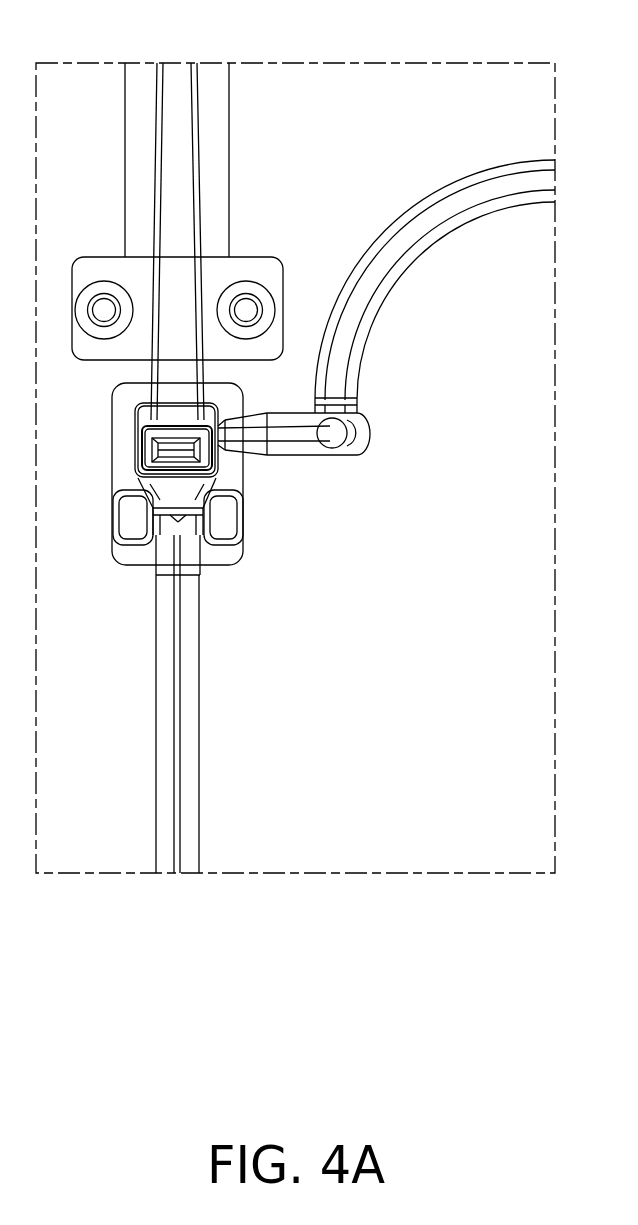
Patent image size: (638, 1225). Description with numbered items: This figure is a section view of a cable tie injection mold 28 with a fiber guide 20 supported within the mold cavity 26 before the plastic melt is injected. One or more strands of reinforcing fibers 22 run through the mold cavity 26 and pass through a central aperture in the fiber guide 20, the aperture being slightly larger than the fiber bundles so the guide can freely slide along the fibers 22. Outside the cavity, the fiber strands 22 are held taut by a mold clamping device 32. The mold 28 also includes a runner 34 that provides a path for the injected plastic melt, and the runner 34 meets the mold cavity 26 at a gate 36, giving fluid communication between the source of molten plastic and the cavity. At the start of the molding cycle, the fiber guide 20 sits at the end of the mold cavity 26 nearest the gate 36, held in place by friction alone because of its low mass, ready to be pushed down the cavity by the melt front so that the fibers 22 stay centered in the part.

The fiber guide 20 is at (200, 573).
The reinforcing fibers 22 is at (197, 179).
The mold cavity 26 is at (186, 808).
The cable tie injection mold 28 is at (368, 87).
The mold clamping device 32 is at (262, 257).
The runner 34 is at (440, 228).
The gate 36 is at (226, 456).